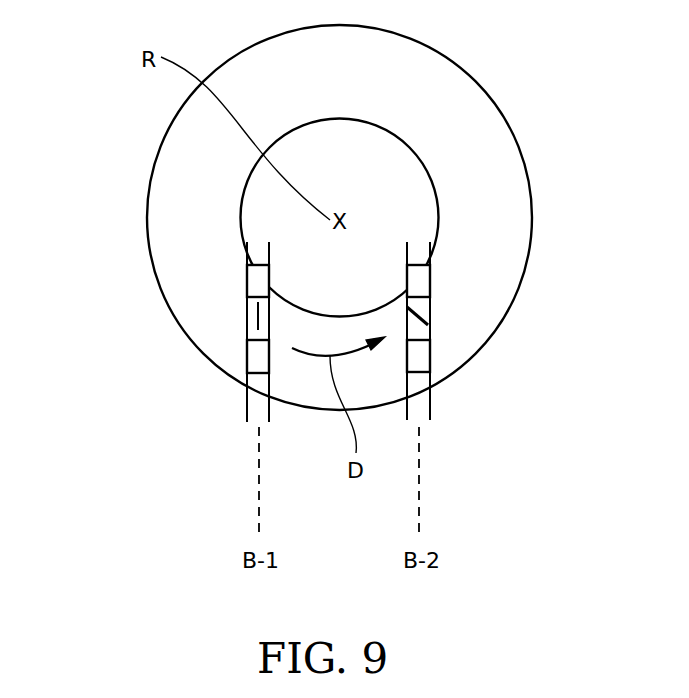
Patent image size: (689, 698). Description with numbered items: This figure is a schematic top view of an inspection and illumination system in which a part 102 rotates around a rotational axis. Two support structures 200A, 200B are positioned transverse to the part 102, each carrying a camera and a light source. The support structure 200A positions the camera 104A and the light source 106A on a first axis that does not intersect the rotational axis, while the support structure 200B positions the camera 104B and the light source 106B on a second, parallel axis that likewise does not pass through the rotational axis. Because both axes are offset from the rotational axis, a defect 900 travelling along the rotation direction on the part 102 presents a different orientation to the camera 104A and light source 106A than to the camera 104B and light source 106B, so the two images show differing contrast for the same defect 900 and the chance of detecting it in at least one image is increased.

The part 102 is at (515, 133).
The camera 104A is at (247, 278).
The camera 104B is at (430, 285).
The light source 106A is at (247, 358).
The light source 106B is at (432, 350).
The defect 900 is at (258, 322).
The support structure 200A is at (247, 400).
The support structure 200B is at (432, 400).